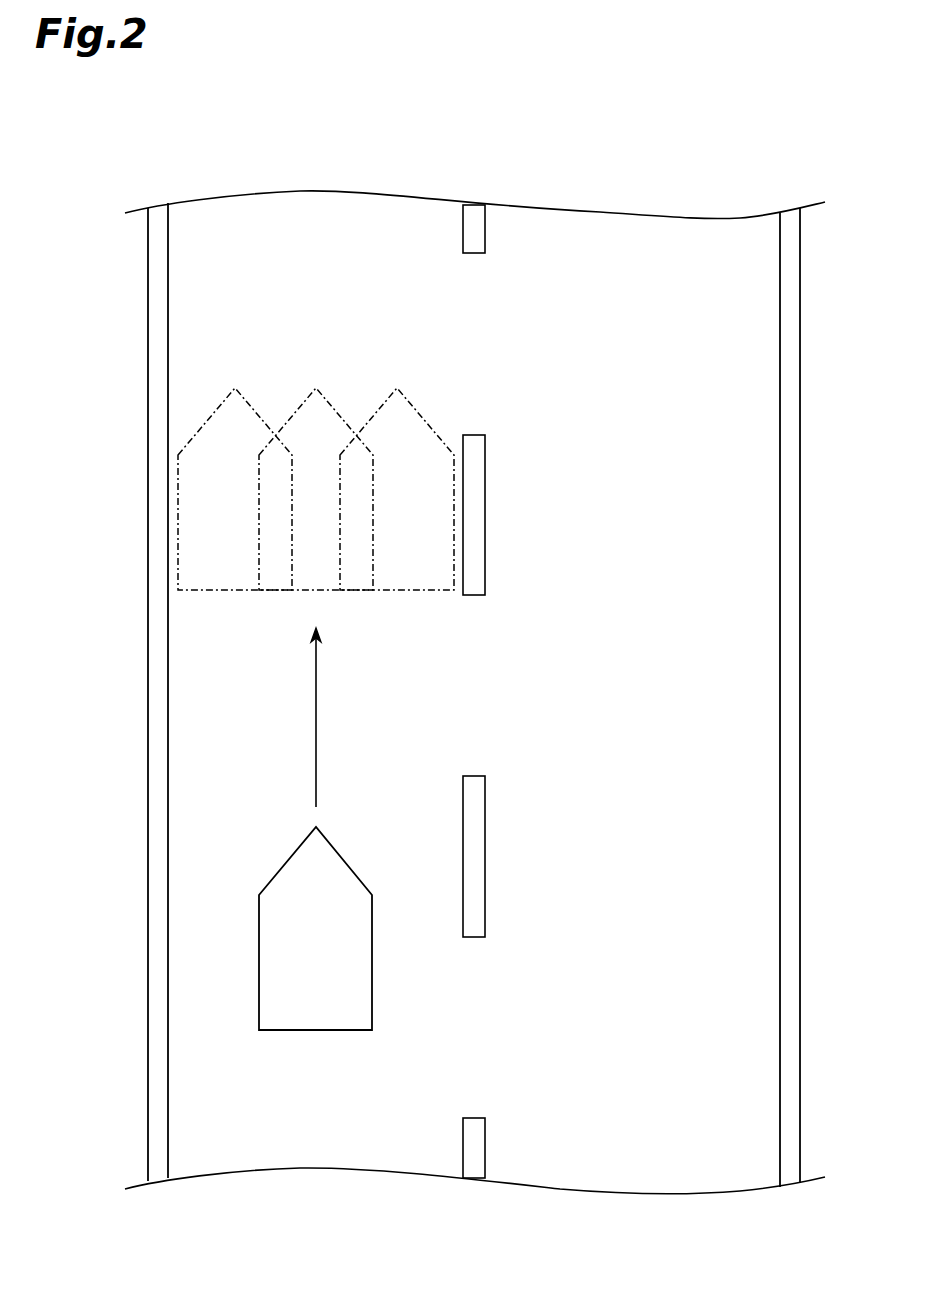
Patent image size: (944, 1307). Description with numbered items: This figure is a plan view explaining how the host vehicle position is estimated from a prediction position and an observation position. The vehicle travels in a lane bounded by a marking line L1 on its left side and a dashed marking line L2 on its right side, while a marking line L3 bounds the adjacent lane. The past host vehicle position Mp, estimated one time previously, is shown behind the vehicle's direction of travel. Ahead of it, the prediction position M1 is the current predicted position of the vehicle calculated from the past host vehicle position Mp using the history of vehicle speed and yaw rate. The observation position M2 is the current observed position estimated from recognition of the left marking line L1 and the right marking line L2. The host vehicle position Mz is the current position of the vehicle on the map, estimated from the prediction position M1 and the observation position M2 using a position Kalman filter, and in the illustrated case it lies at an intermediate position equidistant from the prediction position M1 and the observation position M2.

The marking line on the left side of the vehicle L1 is at (156, 264).
The marking line on the right side of the vehicle L2 is at (474, 212).
The marking line of the adjacent lane L3 is at (792, 260).
The prediction position M1 is at (378, 408).
The observation position M2 is at (218, 410).
The host vehicle position Mz is at (299, 406).
The past host vehicle position Mp is at (284, 1022).